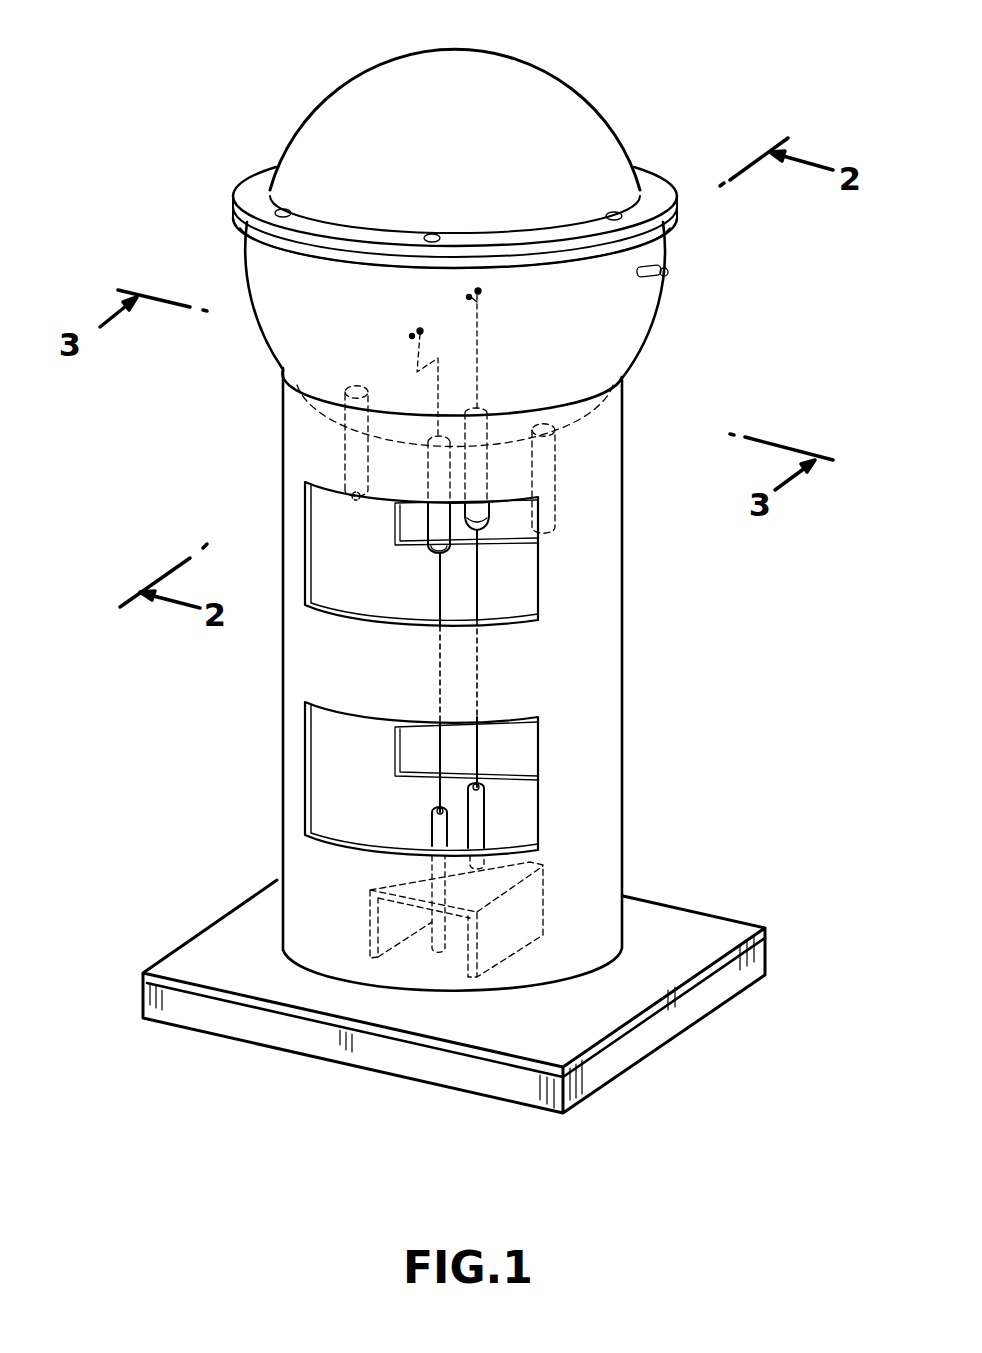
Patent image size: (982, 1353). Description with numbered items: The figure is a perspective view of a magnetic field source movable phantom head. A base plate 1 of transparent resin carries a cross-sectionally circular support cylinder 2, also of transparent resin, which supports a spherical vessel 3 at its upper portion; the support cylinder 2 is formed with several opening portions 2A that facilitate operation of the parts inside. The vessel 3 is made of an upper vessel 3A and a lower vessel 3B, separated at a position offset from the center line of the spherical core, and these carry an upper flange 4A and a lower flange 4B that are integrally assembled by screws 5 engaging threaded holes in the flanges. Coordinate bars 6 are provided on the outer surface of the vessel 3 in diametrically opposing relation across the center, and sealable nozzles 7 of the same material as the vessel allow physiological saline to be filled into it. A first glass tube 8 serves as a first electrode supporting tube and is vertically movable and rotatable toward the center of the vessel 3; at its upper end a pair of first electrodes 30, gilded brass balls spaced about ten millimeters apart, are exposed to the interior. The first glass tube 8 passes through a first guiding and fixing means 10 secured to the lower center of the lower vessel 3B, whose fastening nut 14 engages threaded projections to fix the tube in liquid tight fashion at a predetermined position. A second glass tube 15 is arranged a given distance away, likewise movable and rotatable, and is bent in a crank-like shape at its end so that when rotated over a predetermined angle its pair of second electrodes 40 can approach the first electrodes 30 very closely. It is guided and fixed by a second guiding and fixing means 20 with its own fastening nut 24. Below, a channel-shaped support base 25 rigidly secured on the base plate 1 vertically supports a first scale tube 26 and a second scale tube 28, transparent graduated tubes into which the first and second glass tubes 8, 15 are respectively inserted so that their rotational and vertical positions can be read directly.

The base plate 1 is at (335, 1043).
The support cylinder 2 is at (624, 655).
The opening portions 2A is at (316, 527).
The vessel 3 is at (481, 224).
The upper vessel 3A is at (398, 77).
The lower vessel 3B is at (637, 322).
The upper flange 4A is at (248, 177).
The lower flange 4B is at (243, 228).
The screws 5 is at (285, 209).
The coordinate bars 6 is at (668, 272).
The sealable nozzle 7 is at (345, 443).
The first glass tube 8 is at (480, 736).
The first guiding and fixing means 10 is at (493, 435).
The fastening nut 14 is at (482, 532).
The second glass tube 15 is at (437, 736).
The second guiding and fixing means 20 is at (425, 520).
The fastening nut 24 is at (437, 554).
The support base 25 is at (533, 893).
The first scale tube 26 is at (485, 820).
The second scale tube 28 is at (434, 832).
The first electrodes 30 is at (483, 293).
The second electrodes 40 is at (414, 332).